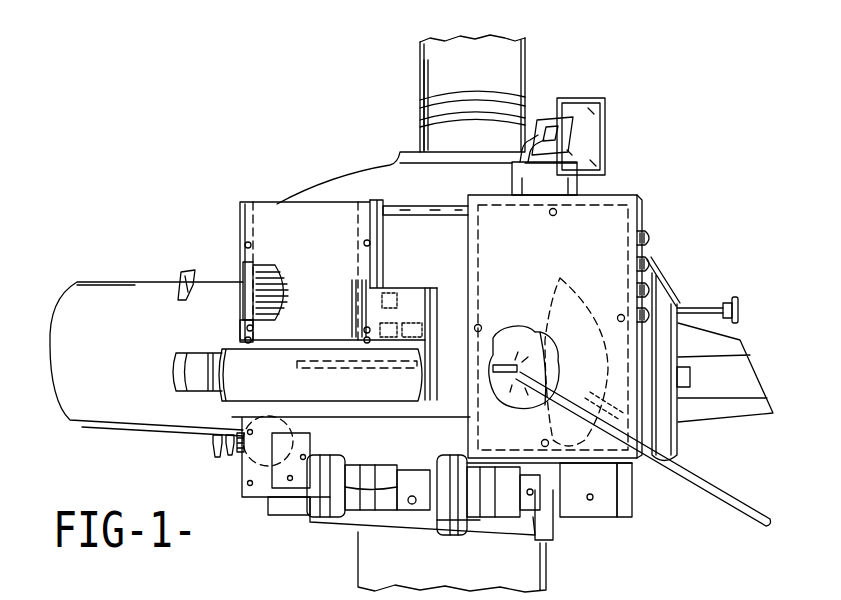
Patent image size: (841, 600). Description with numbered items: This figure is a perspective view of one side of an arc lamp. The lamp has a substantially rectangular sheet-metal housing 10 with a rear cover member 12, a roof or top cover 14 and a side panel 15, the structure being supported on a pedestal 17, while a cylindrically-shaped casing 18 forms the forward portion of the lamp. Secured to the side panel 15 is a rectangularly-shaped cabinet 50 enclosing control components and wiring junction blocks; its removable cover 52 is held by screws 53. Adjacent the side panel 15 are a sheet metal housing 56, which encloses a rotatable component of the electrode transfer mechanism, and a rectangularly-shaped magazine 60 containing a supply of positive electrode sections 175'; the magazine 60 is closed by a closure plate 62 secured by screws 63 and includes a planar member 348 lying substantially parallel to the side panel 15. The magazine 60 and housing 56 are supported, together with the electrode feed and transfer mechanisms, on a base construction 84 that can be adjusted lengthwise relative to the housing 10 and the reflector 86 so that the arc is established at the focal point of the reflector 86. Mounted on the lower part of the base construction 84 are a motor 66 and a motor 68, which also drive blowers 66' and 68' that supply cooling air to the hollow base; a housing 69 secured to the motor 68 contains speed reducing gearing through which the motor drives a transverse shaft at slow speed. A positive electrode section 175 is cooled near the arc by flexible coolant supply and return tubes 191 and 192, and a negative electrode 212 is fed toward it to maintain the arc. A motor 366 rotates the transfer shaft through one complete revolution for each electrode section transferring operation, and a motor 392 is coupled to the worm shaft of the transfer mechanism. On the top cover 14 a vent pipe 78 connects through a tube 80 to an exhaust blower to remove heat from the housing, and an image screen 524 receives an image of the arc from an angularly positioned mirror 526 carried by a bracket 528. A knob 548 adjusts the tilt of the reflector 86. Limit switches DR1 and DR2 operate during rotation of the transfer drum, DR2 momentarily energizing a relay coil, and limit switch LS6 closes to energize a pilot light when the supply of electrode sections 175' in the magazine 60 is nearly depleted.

The housing 10 is at (381, 150).
The rear cover member 12 is at (655, 276).
The roof or top cover 14 is at (322, 187).
The side panel 15 is at (397, 227).
The pedestal 17 is at (366, 565).
The cylindrically-shaped casing 18 is at (118, 290).
The cabinet 50 is at (643, 215).
The removable cover 52 is at (600, 207).
The screws 53 is at (556, 215).
The sheet metal housing 56 is at (432, 305).
The magazine 60 is at (386, 262).
The cover or closure plate 62 is at (288, 220).
The screws 63 is at (251, 245).
The motor 66 is at (503, 518).
The blower 66' is at (450, 478).
The motor 68 is at (377, 511).
The blower 68' is at (336, 470).
The housing 69 is at (415, 472).
The vent pipe 78 is at (425, 108).
The tube 80 is at (518, 58).
The base construction 84 is at (292, 516).
The reflector 86 is at (560, 279).
The positive electrode section 175 is at (524, 367).
The positive electrode sections 175' is at (234, 294).
The flexible tube 191 is at (213, 448).
The flexible tube 192 is at (226, 455).
The negative electrode 212 is at (724, 502).
The magazine member 348 is at (244, 263).
The motor 366 is at (175, 385).
The motor 392 is at (240, 460).
The image screen 524 is at (591, 103).
The mirror 526 is at (572, 138).
The bracket 528 is at (534, 130).
The control knob 548 is at (739, 310).
The limit switch LS6 is at (393, 291).
The limit switch DR1 is at (405, 325).
The limit switch DR2 is at (385, 323).